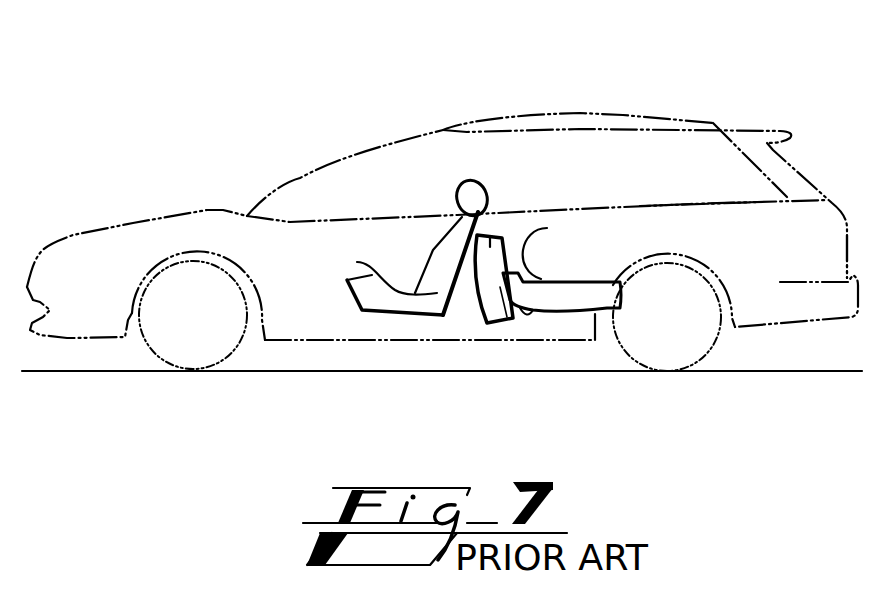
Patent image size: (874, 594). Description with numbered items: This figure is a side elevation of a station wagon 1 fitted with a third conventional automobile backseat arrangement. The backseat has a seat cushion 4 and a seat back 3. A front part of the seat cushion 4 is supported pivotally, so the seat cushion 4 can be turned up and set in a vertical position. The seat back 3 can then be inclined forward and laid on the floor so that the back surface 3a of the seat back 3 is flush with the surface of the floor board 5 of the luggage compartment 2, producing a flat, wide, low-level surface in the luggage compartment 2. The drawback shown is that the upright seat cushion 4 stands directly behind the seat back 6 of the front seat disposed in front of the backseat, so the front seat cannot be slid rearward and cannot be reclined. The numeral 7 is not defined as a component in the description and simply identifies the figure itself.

The station wagon 1 is at (202, 129).
The luggage compartment 2 is at (682, 237).
The seat back 3 is at (570, 291).
The back surface 3a is at (556, 248).
The seat cushion 4 is at (493, 235).
The floor board 5 is at (780, 282).
The seat back of front seat 6 is at (427, 243).
The front seat cushion 7 is at (357, 262).